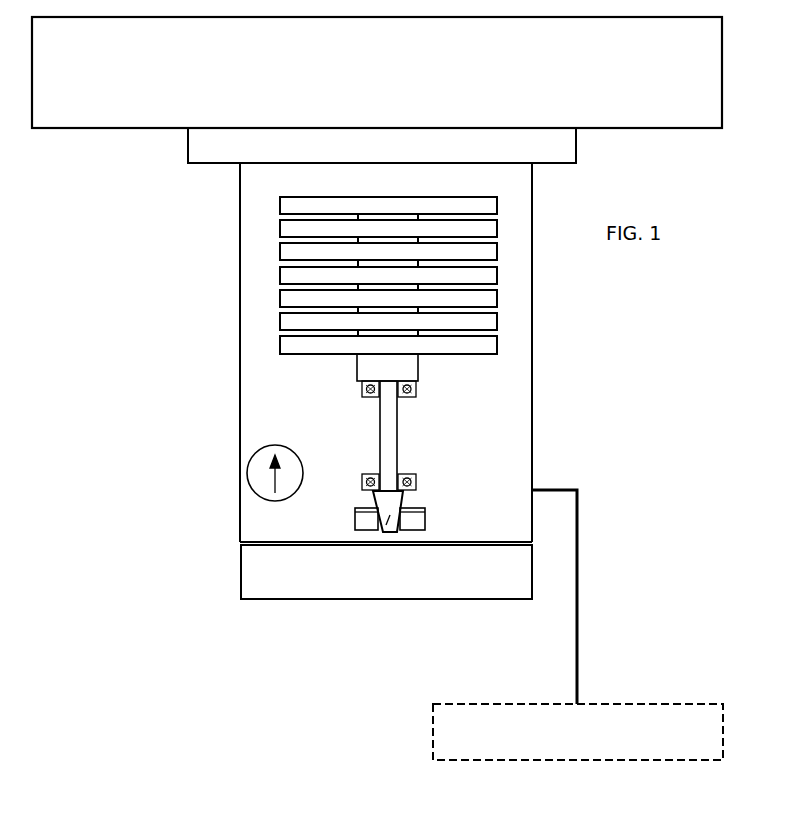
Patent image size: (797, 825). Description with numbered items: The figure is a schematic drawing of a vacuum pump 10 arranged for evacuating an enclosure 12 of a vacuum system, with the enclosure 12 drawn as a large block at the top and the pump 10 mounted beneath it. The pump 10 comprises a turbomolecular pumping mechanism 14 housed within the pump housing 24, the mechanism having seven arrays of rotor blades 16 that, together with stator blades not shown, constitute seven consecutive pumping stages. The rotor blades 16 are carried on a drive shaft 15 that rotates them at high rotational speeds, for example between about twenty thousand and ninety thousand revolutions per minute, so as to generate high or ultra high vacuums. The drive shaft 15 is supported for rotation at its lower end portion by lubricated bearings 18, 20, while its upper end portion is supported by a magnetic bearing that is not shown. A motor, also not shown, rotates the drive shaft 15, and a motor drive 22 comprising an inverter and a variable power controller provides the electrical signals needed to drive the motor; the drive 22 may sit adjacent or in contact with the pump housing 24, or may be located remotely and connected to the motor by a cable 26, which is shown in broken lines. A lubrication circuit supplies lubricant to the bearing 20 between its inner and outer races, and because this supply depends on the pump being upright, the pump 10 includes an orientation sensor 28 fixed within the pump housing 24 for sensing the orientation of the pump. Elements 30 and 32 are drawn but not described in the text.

The vacuum pump 10 is at (125, 494).
The enclosure 12 is at (395, 85).
The turbomolecular pumping mechanism 14 is at (518, 304).
The drive shaft 15 is at (379, 417).
The rotor blades 16 is at (290, 203).
The lubricated bearing 18 is at (418, 394).
The lubricated bearing 20 is at (418, 482).
The motor drive 22 is at (398, 585).
The pump housing 24 is at (240, 373).
The cable 26 is at (578, 591).
The orientation sensor 28 is at (252, 460).
The supports 30 is at (362, 520).
The nozzle 32 is at (385, 528).